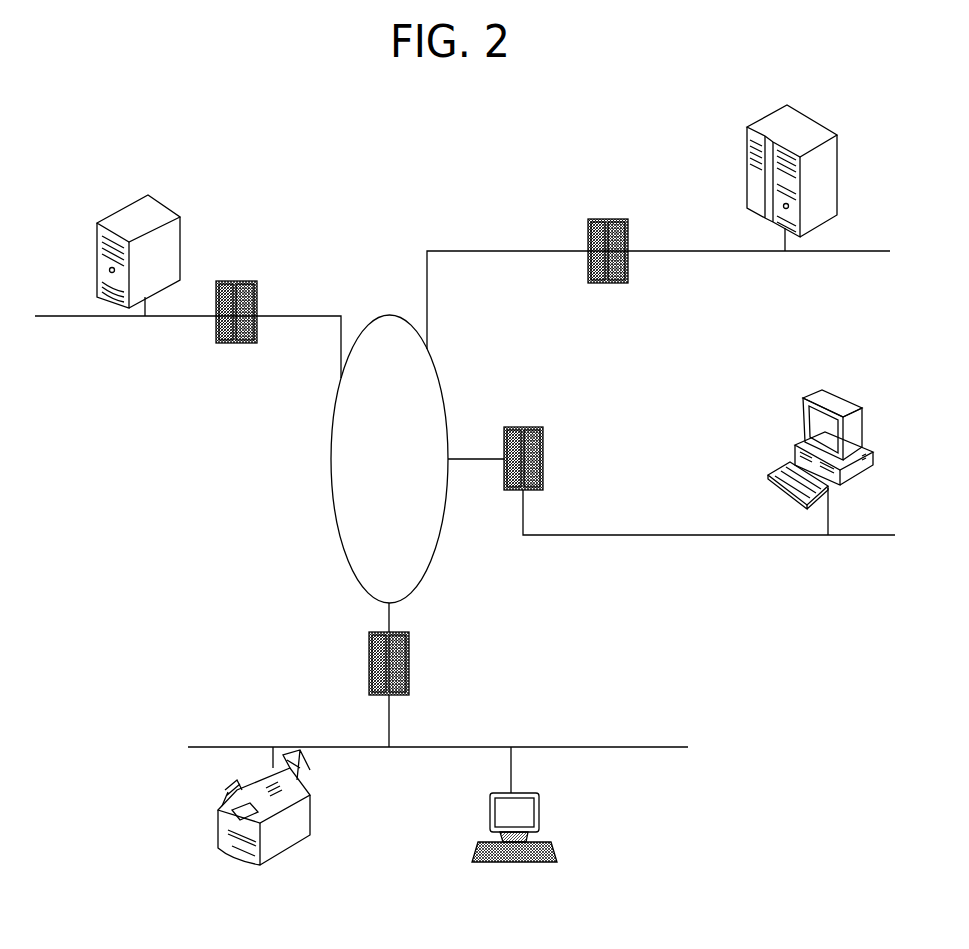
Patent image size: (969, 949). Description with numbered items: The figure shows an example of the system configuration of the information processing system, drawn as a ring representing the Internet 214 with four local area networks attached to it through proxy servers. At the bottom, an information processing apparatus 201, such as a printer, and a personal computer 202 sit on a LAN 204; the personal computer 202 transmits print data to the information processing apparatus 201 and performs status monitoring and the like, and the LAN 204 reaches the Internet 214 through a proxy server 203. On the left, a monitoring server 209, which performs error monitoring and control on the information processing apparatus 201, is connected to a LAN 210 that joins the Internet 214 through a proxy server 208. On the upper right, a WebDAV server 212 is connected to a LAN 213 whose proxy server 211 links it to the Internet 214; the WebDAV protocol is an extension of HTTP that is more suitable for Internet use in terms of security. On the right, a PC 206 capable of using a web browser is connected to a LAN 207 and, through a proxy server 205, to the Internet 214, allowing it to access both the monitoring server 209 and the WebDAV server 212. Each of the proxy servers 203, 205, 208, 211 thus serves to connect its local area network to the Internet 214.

The information processing apparatus 201 is at (312, 814).
The personal computer 202 is at (540, 811).
The proxy server 203 is at (409, 658).
The LAN 204 is at (640, 747).
The proxy server 205 is at (525, 427).
The PC 206 is at (845, 402).
The LAN 207 is at (870, 535).
The proxy server 208 is at (241, 281).
The monitoring server 209 is at (181, 186).
The LAN 210 is at (52, 316).
The proxy server 211 is at (610, 219).
The WebDAV server 212 is at (810, 118).
The LAN 213 is at (862, 251).
The Internet 214 is at (331, 472).